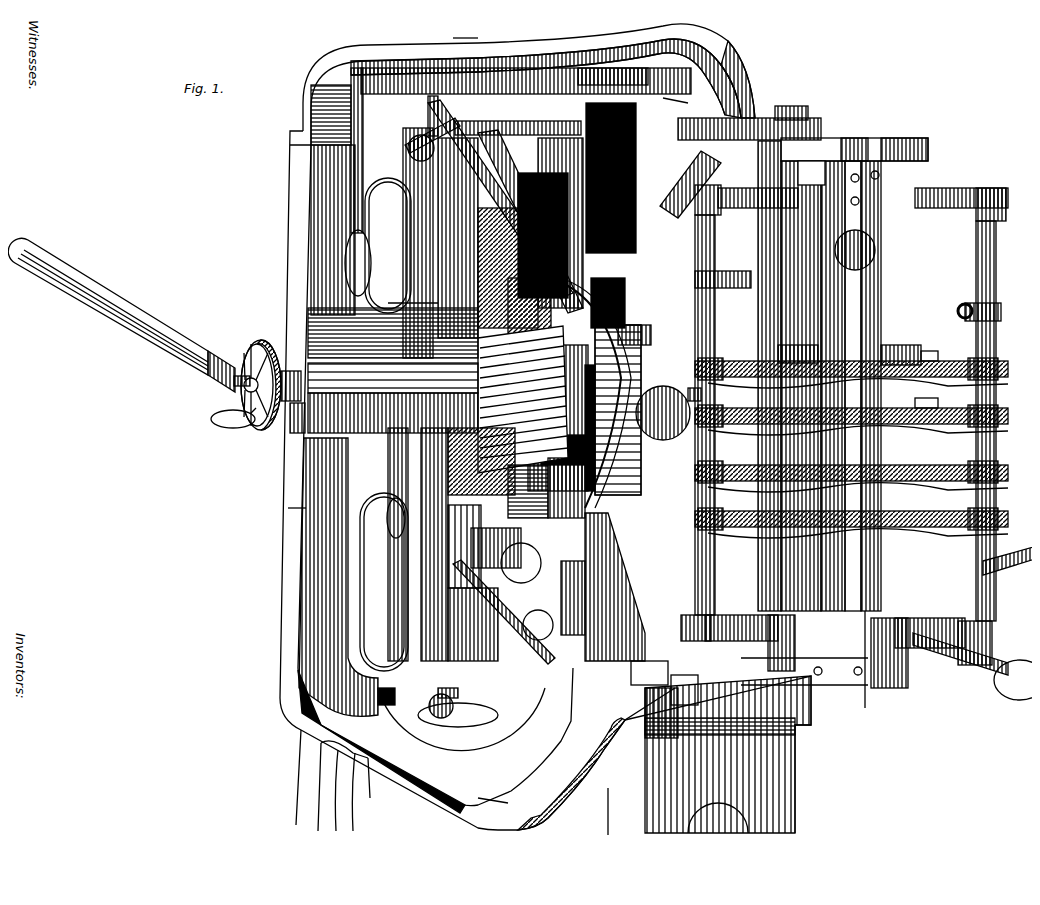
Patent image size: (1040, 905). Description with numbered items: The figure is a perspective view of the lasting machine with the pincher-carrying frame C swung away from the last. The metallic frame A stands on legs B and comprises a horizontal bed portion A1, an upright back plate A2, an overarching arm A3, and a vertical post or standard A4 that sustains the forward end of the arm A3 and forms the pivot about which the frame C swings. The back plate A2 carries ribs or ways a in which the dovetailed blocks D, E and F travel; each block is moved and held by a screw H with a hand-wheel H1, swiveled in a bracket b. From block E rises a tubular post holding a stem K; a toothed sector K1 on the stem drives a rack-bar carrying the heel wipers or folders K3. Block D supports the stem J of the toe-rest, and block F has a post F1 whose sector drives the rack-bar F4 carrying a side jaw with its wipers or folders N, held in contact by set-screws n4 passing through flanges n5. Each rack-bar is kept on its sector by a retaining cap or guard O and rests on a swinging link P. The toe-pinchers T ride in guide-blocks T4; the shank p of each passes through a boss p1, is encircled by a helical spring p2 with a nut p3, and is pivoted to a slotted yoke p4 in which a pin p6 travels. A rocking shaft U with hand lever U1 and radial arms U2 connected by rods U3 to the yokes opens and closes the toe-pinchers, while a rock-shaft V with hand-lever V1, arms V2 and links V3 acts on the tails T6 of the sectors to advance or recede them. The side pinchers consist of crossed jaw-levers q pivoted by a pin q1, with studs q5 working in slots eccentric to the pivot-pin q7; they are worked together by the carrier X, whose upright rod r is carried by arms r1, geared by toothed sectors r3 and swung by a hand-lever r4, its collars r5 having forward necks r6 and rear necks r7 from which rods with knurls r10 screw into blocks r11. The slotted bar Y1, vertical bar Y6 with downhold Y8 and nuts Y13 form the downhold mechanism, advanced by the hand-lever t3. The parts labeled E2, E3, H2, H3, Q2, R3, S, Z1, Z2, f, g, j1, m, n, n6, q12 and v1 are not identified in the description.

The metallic frame A is at (517, 427).
The horizontal bed portion A1 is at (492, 791).
The upright back plate A2 is at (284, 508).
The overarching arm A3 is at (457, 30).
The vertical post or standard A4 is at (758, 175).
The legs B is at (300, 792).
The pincher-carrying frame C is at (844, 434).
The block D is at (459, 243).
The block E is at (528, 546).
The column E2 is at (413, 560).
The wheel E3 is at (413, 520).
The block F is at (359, 404).
The post F1 is at (261, 448).
The toothed rack-bar F4 is at (258, 466).
The screw H is at (258, 386).
The hand-wheel H1 is at (343, 581).
The arm H2 is at (545, 115).
The base disc H3 is at (458, 707).
The stem J is at (548, 278).
The stem K is at (568, 613).
The toothed sector K1 is at (504, 612).
The heel wipers or folders K3 is at (617, 587).
The wipers or folders N is at (523, 399).
The retaining cap or guard O is at (543, 591).
The swinging link P is at (542, 295).
The block Q2 is at (300, 300).
The handle R3 is at (129, 316).
The tab S is at (937, 340).
The pinchers T is at (667, 275).
The supporting head or block T4 is at (655, 180).
The tails or lever-extensions T6 is at (664, 166).
The rocking shaft U is at (526, 101).
The hand lever U1 is at (447, 128).
The radial arms U2 is at (675, 92).
The rods U3 is at (630, 148).
The rock-shaft V is at (386, 109).
The hand-lever V1 is at (363, 182).
The radial arms V2 is at (405, 121).
The rods or links V3 is at (387, 143).
The frame or carrier X is at (839, 416).
The slotted bar Y1 is at (902, 271).
The vertical bar Y6 is at (902, 298).
The downhold Y8 is at (852, 593).
The nuts Y13 is at (874, 250).
The screw Z1 is at (883, 583).
The screw Z2 is at (924, 583).
The ribs or ways a is at (332, 423).
The bracket b is at (395, 535).
The pin f is at (376, 555).
The pin g is at (374, 571).
The pin j1 is at (500, 711).
The plate m is at (350, 395).
The segment n is at (467, 393).
The set-screws n4 is at (650, 410).
The flanges n5 is at (558, 411).
The segment n6 is at (654, 406).
The straight shank p is at (723, 157).
The boss p1 is at (690, 190).
The helical spring p2 is at (739, 183).
The nut p3 is at (734, 168).
The curved and slotted yoke p4 is at (682, 247).
The pin p6 is at (684, 234).
The jaw-levers q is at (851, 454).
The pivot-pin q1 is at (912, 557).
The pin or stud q5 is at (830, 506).
The pivot-pin q7 is at (940, 503).
The block q12 is at (905, 328).
The upright cylindrical rod r is at (847, 381).
The arms r1 is at (844, 431).
The toothed sector r3 is at (854, 140).
The hand-lever r4 is at (1007, 558).
The collars or hubs r5 is at (859, 339).
The forwardly-extending neck r6 is at (857, 309).
The rearwardly-extending neck r7 is at (676, 291).
The boss or knurl r10 is at (1016, 383).
The nut or block r11 is at (1016, 428).
The hand-lever t3 is at (972, 666).
The platform v1 is at (664, 692).